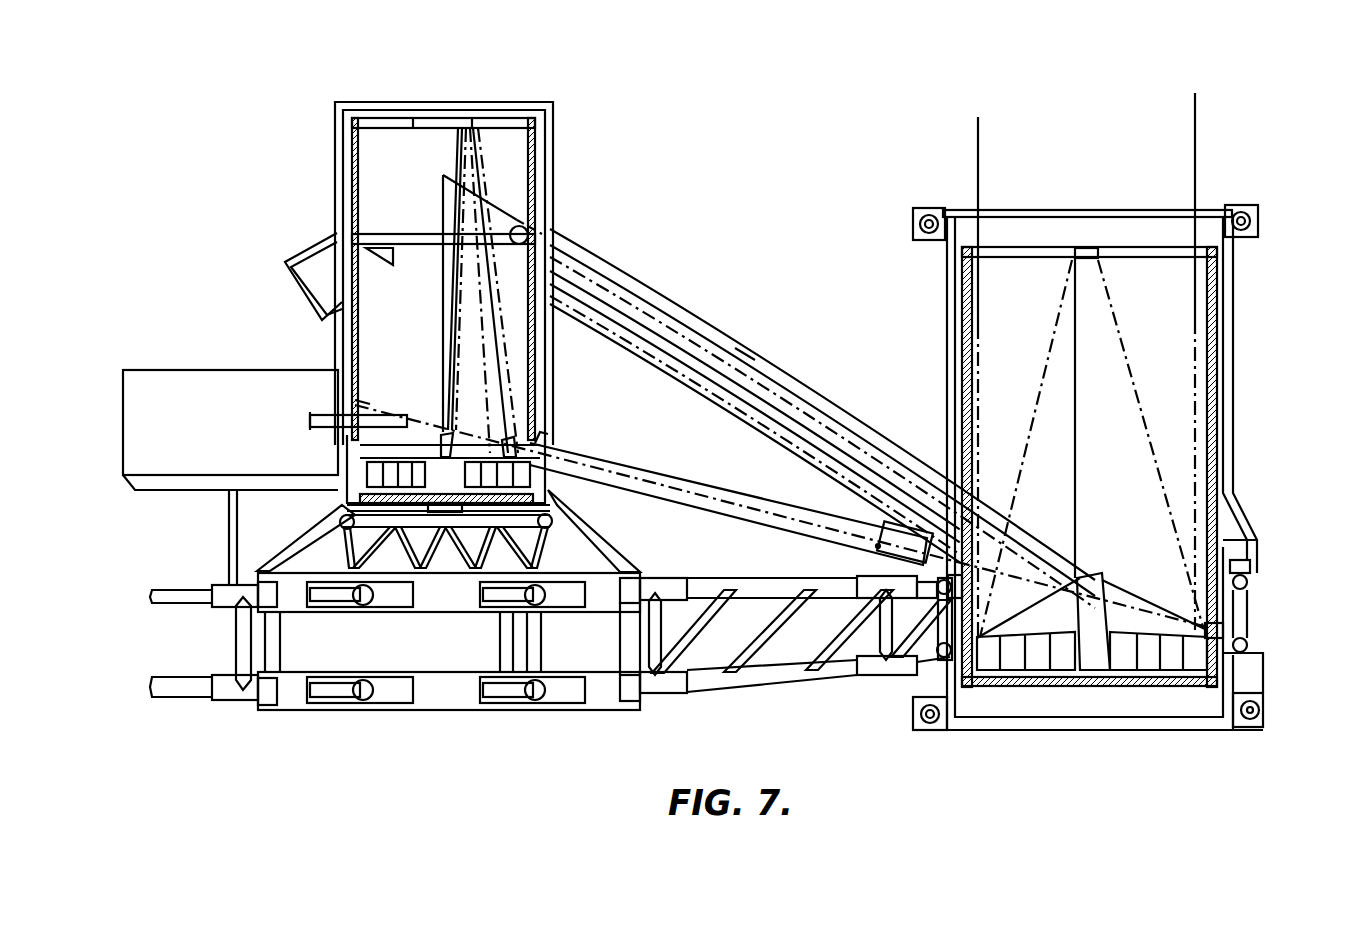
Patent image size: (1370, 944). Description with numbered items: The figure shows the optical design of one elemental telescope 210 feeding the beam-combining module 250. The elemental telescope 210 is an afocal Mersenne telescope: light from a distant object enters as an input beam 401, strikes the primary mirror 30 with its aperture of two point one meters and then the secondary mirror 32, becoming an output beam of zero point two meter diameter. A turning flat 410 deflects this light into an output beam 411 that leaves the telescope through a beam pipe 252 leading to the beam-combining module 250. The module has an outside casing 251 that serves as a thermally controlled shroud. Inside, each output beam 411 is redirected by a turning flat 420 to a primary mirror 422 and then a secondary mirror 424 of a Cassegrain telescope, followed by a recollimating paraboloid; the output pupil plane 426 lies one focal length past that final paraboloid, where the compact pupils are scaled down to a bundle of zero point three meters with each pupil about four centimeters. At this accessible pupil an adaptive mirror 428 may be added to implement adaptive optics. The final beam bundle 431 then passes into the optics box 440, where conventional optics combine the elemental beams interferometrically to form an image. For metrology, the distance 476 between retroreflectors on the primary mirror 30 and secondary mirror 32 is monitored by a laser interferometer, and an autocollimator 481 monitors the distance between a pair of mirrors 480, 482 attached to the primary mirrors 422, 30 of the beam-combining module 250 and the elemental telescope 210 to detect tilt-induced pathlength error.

The beam-combining module 250 is at (296, 133).
The outside casing 251 is at (337, 115).
The secondary mirror 424 is at (452, 118).
The turning flat 420 is at (528, 232).
The beam pipe 252 is at (698, 308).
The output beam 411 is at (767, 345).
The optics box 440 is at (167, 388).
The adaptive mirror 428 is at (352, 403).
The final beam bundle 431 is at (322, 417).
The output pupil plane 426 is at (441, 437).
The mirror 480 is at (535, 445).
The autocollimator 481 is at (878, 546).
The primary mirror 422 is at (558, 500).
The turning flat 410 is at (1092, 573).
The secondary mirror 32 is at (1090, 247).
The input beam 401 is at (1196, 172).
The distance 476 is at (1078, 400).
The elemental telescope 210 is at (1282, 397).
The mirror 482 is at (1248, 607).
The primary mirror 30 is at (1222, 633).